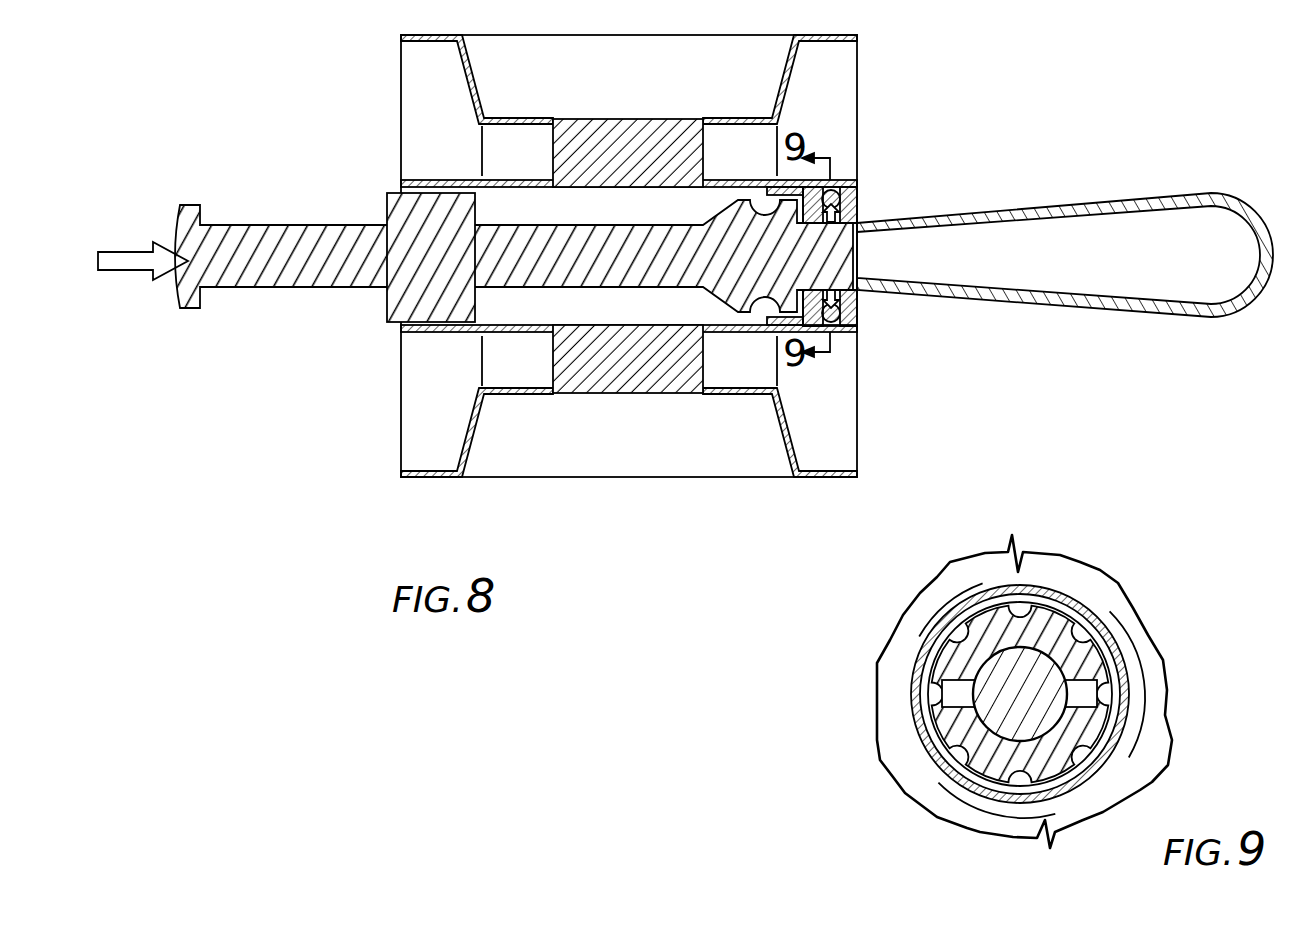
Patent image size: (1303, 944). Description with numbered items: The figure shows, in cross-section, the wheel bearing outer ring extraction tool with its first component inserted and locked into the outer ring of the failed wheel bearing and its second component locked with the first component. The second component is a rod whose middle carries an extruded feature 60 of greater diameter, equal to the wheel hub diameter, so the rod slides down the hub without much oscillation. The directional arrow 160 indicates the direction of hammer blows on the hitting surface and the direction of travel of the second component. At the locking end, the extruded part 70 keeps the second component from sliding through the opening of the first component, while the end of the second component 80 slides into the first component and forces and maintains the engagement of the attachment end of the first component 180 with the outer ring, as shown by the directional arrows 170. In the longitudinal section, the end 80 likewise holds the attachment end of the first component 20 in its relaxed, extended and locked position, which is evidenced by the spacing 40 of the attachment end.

In FIG. 9, the attachment end of the first component 20 is at (985, 745).
In FIG. 9, the spacing of the attachment end 40 is at (1082, 696).
In FIG. 8, the extruded feature 60 is at (402, 213).
In FIG. 8, the extruded part 70 is at (802, 195).
In FIG. 8, the end of the second component 80 is at (862, 288).
In FIG. 9, the end of the second component 80 is at (1013, 687).
In FIG. 8, the directional arrow 160 is at (118, 238).
In FIG. 8, the directional arrows 170 is at (857, 313).
In FIG. 8, the attachment end of the first component 180 is at (855, 222).